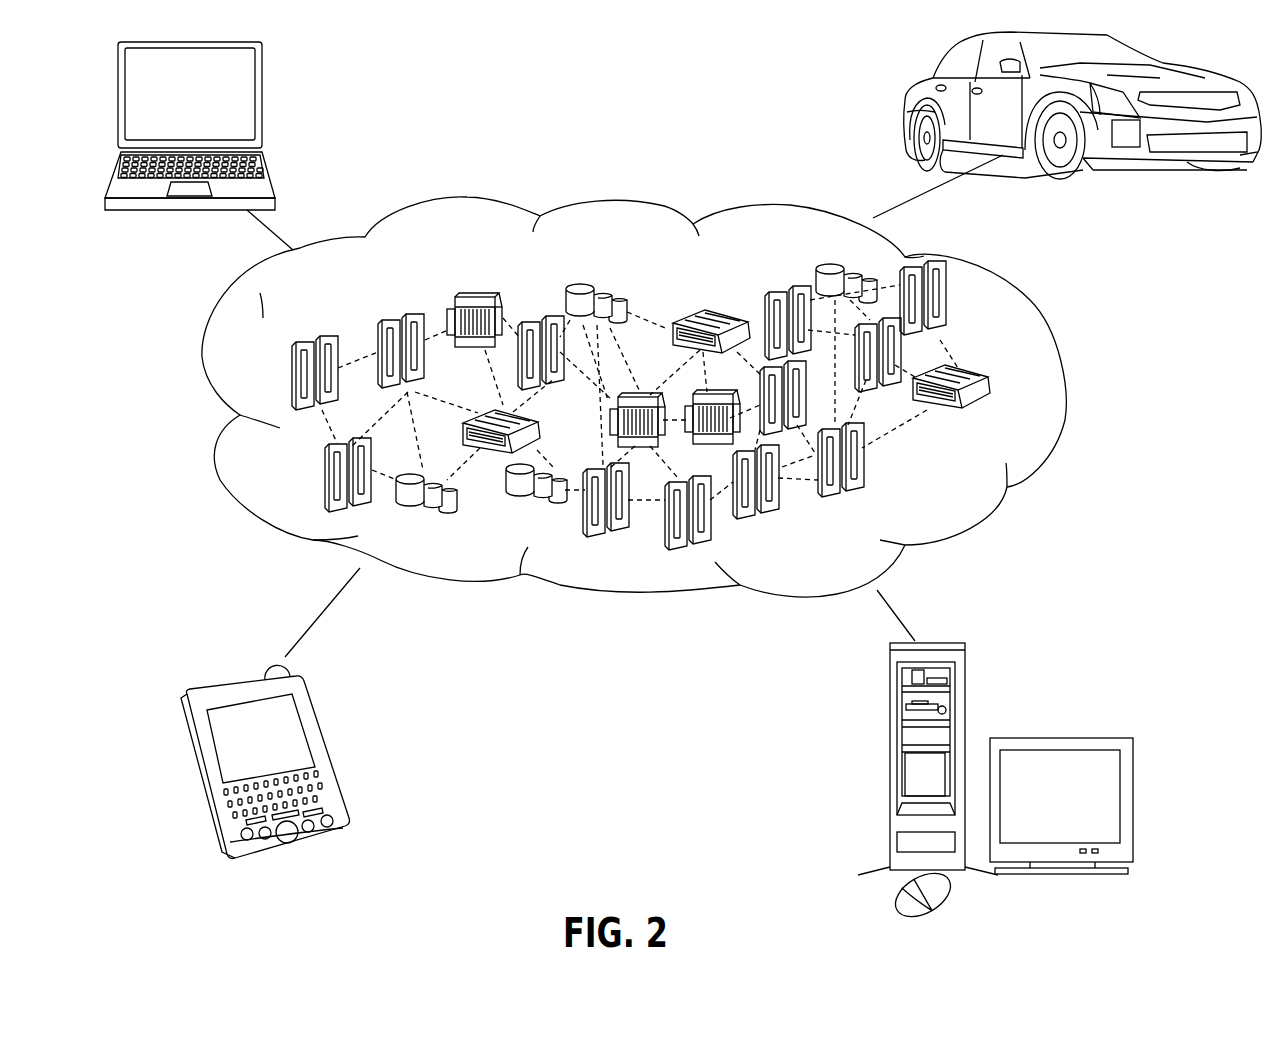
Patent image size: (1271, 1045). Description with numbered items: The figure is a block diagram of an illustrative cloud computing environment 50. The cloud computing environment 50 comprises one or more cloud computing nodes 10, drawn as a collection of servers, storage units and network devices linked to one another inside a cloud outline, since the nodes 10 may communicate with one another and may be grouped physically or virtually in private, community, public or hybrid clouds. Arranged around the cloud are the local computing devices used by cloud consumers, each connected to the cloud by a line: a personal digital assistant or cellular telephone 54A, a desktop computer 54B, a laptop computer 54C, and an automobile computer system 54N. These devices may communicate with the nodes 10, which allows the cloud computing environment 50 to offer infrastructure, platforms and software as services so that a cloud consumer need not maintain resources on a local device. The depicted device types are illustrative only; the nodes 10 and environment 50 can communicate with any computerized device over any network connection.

The cloud computing nodes 10 is at (967, 492).
The cloud computing environment 50 is at (1063, 385).
The personal digital assistant or cellular telephone 54A is at (317, 718).
The desktop computer 54B is at (888, 704).
The laptop computer 54C is at (263, 80).
The automobile computer system 54N is at (907, 97).